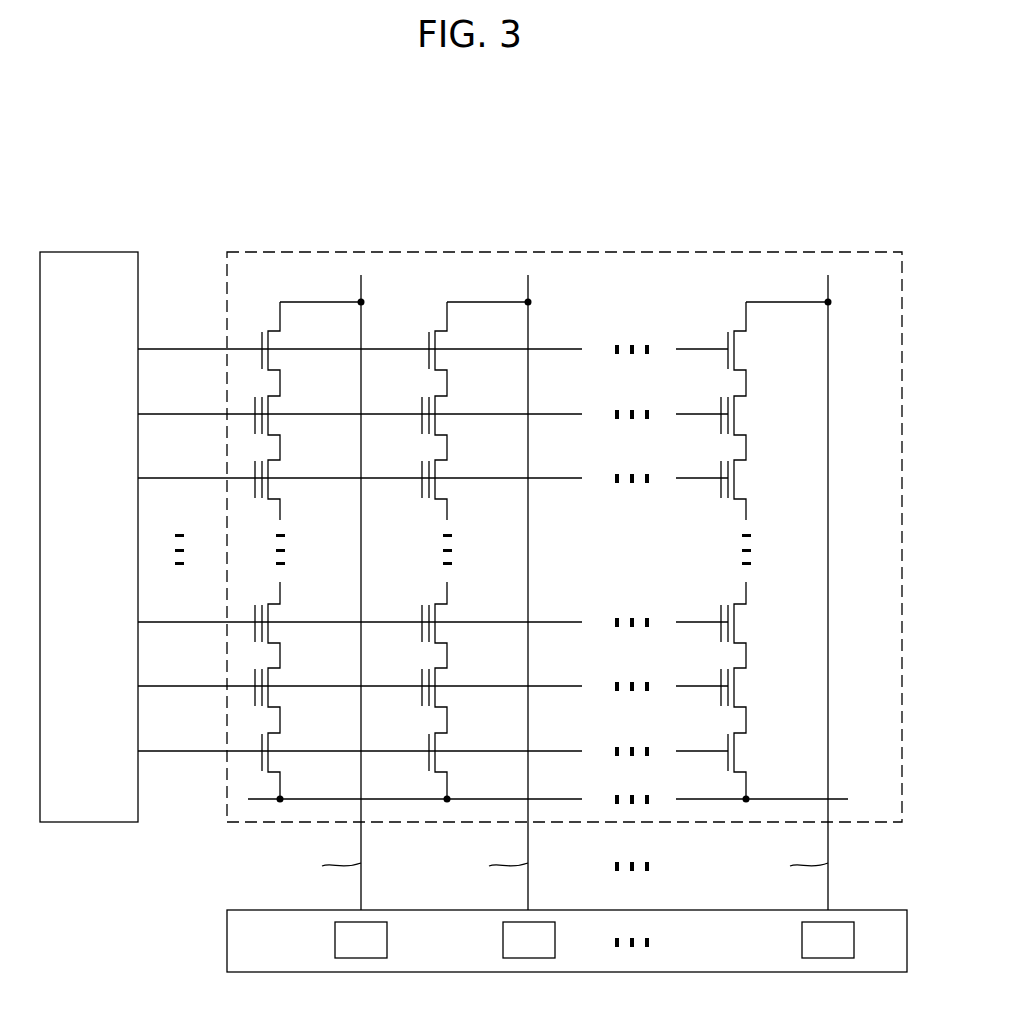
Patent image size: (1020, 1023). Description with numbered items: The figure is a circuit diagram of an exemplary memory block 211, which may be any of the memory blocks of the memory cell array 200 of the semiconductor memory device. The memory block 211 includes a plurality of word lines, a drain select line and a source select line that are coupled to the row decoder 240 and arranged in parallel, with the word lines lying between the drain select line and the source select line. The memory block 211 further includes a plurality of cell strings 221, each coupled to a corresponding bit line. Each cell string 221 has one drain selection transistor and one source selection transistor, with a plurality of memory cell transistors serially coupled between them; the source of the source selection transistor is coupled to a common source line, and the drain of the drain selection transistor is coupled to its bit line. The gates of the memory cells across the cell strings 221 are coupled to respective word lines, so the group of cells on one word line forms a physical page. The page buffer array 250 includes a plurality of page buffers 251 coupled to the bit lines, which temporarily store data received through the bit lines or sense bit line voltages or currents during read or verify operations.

The memory cell array 200 is at (863, 181).
The memory block 211 is at (789, 250).
The cell string 221 is at (267, 290).
The row decoder 240 is at (89, 250).
The page buffer array 250 is at (227, 940).
The page buffer 251 is at (335, 940).